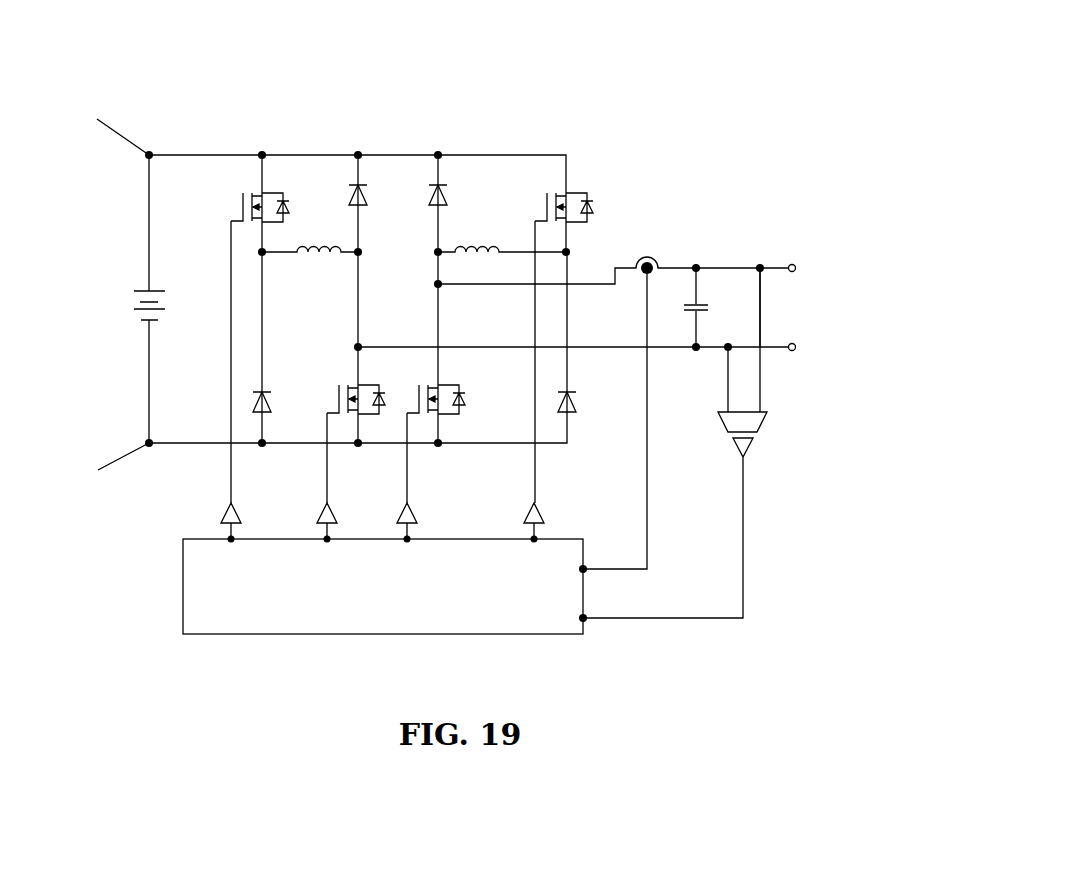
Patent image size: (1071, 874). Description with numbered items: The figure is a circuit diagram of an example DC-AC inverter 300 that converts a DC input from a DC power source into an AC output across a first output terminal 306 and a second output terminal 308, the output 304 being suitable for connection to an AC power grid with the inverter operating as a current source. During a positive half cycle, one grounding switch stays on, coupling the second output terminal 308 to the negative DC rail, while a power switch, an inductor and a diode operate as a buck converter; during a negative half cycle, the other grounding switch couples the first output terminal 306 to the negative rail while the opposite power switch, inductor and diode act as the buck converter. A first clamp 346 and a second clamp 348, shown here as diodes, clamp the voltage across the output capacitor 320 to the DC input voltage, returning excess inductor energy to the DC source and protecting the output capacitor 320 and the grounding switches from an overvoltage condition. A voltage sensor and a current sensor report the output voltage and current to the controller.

The DC-AC inverter 300 is at (623, 102).
The first clamp 346 is at (345, 185).
The second clamp 348 is at (450, 200).
The output capacitor 320 is at (702, 300).
The output 304 is at (795, 310).
The first output terminal 306 is at (797, 265).
The second output terminal 308 is at (795, 350).